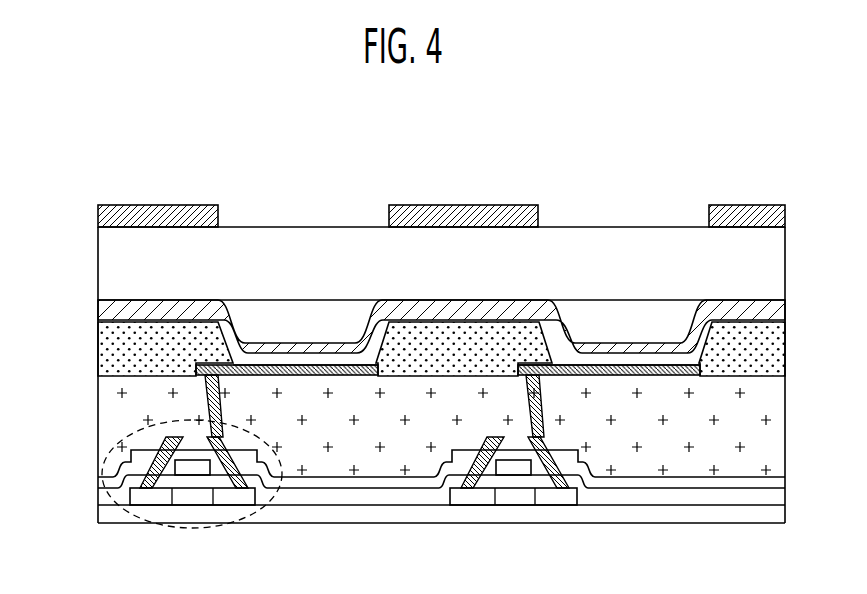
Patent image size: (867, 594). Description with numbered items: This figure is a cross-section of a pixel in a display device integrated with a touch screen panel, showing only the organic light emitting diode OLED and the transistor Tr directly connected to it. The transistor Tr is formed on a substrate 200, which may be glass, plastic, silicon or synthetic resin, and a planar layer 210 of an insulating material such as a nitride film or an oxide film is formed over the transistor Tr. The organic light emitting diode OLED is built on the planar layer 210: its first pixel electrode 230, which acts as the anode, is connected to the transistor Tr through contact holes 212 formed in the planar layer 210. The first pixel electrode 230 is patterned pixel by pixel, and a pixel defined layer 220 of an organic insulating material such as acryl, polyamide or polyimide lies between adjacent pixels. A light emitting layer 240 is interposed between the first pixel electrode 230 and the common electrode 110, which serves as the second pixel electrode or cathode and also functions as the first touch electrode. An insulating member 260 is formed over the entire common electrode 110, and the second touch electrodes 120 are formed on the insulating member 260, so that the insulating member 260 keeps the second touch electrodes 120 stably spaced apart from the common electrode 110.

The common electrode 110 is at (270, 347).
The second touch electrodes 120 is at (492, 207).
The substrate 200 is at (98, 515).
The planar layer 210 is at (98, 426).
The contact holes 212 is at (237, 415).
The pixel defined layer 220 is at (100, 345).
The first pixel electrode 230 is at (345, 345).
The light emitting layer 240 is at (308, 357).
The insulating member 260 is at (100, 252).
The transistor Tr is at (118, 431).
The organic light emitting diode OLED is at (378, 153).